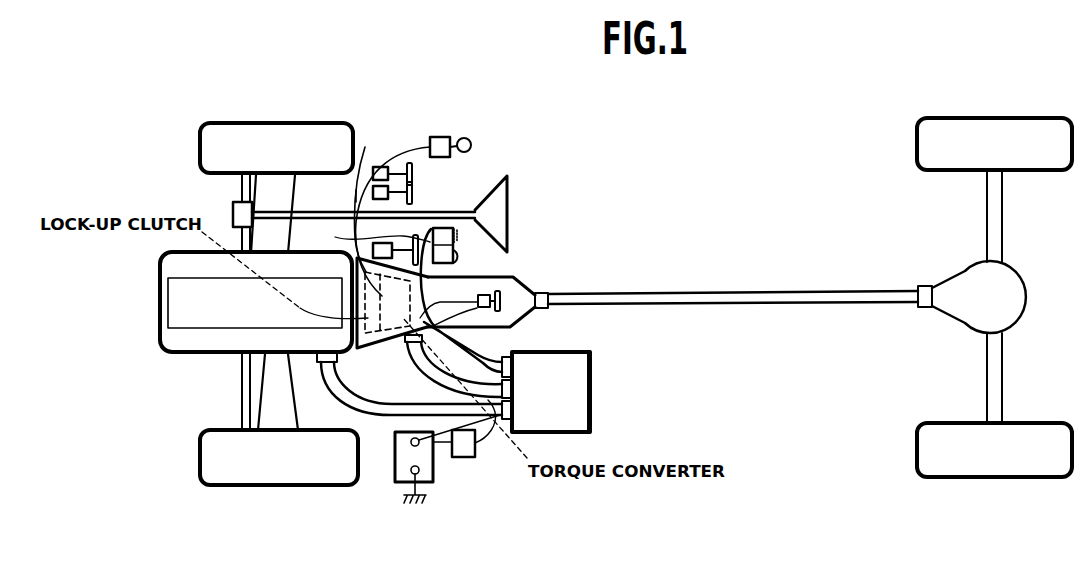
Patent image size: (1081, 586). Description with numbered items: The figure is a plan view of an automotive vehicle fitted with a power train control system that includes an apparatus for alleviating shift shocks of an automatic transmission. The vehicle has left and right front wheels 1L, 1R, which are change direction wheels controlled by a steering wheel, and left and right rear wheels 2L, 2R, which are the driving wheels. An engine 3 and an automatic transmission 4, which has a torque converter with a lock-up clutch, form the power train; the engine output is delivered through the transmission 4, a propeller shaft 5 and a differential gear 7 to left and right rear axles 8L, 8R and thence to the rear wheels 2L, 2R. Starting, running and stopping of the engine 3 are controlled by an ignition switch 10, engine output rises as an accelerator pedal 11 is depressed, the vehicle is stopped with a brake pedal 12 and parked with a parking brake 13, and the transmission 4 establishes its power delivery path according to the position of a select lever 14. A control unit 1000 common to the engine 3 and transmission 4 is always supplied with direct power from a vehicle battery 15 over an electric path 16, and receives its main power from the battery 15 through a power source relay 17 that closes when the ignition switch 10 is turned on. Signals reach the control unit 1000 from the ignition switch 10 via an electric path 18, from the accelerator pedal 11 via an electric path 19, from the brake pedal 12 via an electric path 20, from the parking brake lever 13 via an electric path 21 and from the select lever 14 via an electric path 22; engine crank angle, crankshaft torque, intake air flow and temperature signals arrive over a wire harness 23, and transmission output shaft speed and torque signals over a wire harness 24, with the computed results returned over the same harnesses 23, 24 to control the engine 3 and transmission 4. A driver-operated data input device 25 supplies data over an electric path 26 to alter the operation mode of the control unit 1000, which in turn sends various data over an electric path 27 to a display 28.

The right front wheel 1R is at (230, 123).
The left front wheel 1L is at (222, 485).
The right rear wheel 2R is at (1052, 118).
The left rear wheel 2L is at (1049, 477).
The engine 3 is at (190, 352).
The automatic transmission 4 is at (372, 348).
The propeller shaft 5 is at (795, 292).
The differential gear 7 is at (1030, 306).
The right rear axle 8R is at (1003, 233).
The left rear axle 8L is at (1003, 376).
The ignition switch 10 is at (440, 137).
The accelerator pedal 11 is at (414, 173).
The brake pedal 12 is at (414, 192).
The parking brake 13 is at (371, 245).
The select lever 14 is at (540, 291).
The vehicle battery 15 is at (395, 458).
The electric path 16 is at (444, 432).
The power source relay 17 is at (466, 457).
The electric path 18 is at (400, 152).
The electric path 19 is at (367, 199).
The electric path 20 is at (356, 196).
The electric path 21 is at (356, 256).
The electric path 22 is at (514, 314).
The wire harness 23 is at (343, 392).
The wire harness 24 is at (436, 384).
The data input device 25 is at (458, 232).
The electric path 26 is at (430, 292).
The electric path 27 is at (448, 316).
The display 28 is at (460, 258).
The control unit 1000 is at (591, 401).